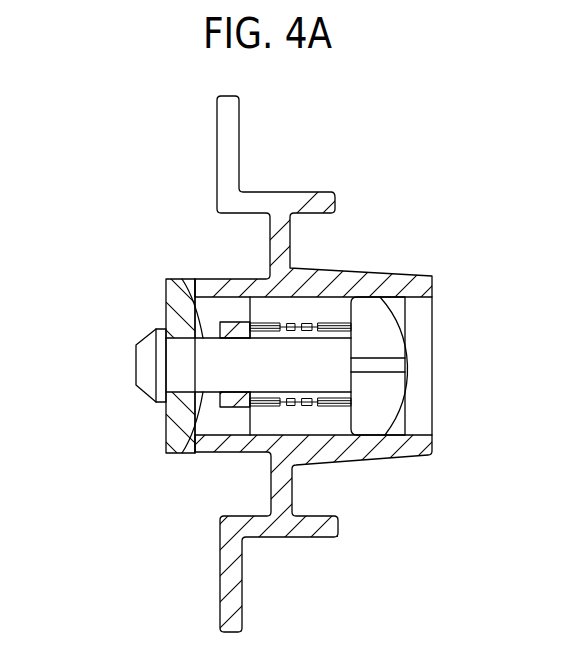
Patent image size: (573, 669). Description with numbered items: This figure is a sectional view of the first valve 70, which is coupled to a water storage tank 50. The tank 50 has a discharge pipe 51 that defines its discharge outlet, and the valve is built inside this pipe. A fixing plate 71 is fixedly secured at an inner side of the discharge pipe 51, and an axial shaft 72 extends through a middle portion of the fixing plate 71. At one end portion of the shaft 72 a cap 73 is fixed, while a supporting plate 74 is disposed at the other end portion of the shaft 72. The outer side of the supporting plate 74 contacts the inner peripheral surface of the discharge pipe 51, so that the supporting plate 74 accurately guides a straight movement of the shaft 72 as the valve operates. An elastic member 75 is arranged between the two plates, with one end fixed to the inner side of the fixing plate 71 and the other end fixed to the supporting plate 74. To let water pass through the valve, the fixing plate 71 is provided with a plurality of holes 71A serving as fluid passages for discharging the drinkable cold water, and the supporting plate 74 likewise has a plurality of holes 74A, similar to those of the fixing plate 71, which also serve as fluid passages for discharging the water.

The tank 50 is at (258, 129).
The discharge pipe 51 is at (432, 288).
The first valve 70 is at (158, 320).
The fixing plate 71 is at (240, 308).
The holes 71A is at (237, 423).
The axial shaft 72 is at (145, 368).
The cap 73 is at (182, 420).
The supporting plate 74 is at (387, 392).
The holes 74A is at (368, 420).
The elastic member 75 is at (333, 320).